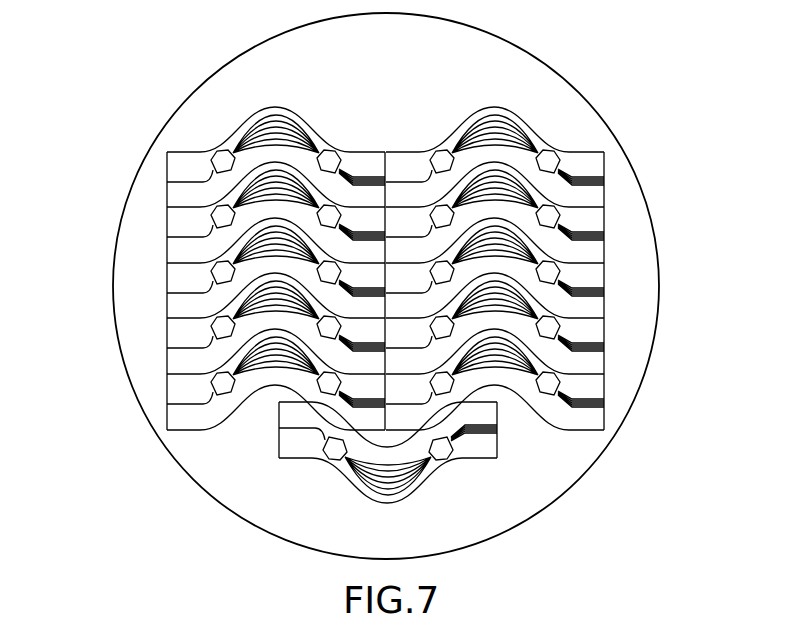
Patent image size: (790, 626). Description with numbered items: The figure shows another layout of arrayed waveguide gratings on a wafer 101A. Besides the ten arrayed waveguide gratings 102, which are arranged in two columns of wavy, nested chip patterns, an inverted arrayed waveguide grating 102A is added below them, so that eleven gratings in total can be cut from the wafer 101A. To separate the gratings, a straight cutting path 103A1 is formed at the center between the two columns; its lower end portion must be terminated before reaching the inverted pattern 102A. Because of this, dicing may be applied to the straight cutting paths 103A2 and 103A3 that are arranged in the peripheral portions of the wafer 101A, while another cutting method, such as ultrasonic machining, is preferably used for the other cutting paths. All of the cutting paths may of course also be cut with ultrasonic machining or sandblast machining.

The wafer 101A is at (526, 48).
The arrayed waveguide gratings 102 is at (493, 113).
The inverted arrayed waveguide grating 102A is at (389, 504).
The straight cutting path 103A1 is at (386, 150).
The straight cutting path 103A2 is at (167, 190).
The straight cutting path 103A3 is at (561, 246).